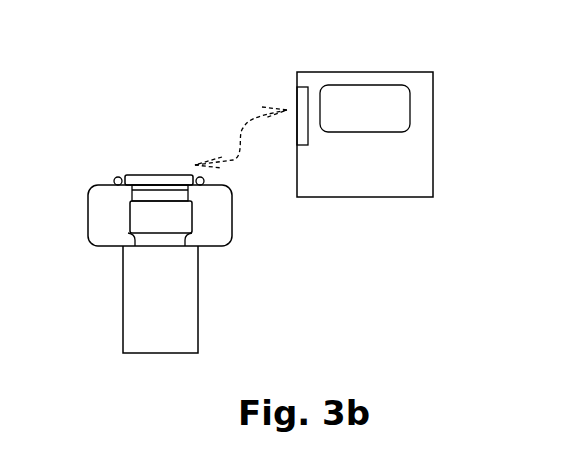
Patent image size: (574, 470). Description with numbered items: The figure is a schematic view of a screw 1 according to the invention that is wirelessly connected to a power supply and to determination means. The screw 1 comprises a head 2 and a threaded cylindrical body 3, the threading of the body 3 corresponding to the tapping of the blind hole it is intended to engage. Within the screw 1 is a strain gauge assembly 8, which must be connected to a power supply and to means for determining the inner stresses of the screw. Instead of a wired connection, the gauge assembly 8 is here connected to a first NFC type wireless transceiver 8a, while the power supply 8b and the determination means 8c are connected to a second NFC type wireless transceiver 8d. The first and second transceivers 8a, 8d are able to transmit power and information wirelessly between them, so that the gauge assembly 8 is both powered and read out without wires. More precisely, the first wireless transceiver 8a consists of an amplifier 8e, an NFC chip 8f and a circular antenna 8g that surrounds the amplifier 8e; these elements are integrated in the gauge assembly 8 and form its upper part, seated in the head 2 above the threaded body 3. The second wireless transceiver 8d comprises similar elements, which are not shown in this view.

The screw 1 is at (104, 100).
The head 2 is at (80, 223).
The threaded cylindrical body 3 is at (207, 315).
The strain gauge assembly 8 is at (203, 220).
The first NFC type wireless transceiver 8a is at (148, 165).
The power supply 8b is at (402, 172).
The determination means 8c is at (375, 102).
The second NFC type wireless transceiver 8d is at (302, 97).
The amplifier 8e is at (138, 195).
The NFC chip 8f is at (170, 183).
The circular antenna 8g is at (116, 177).